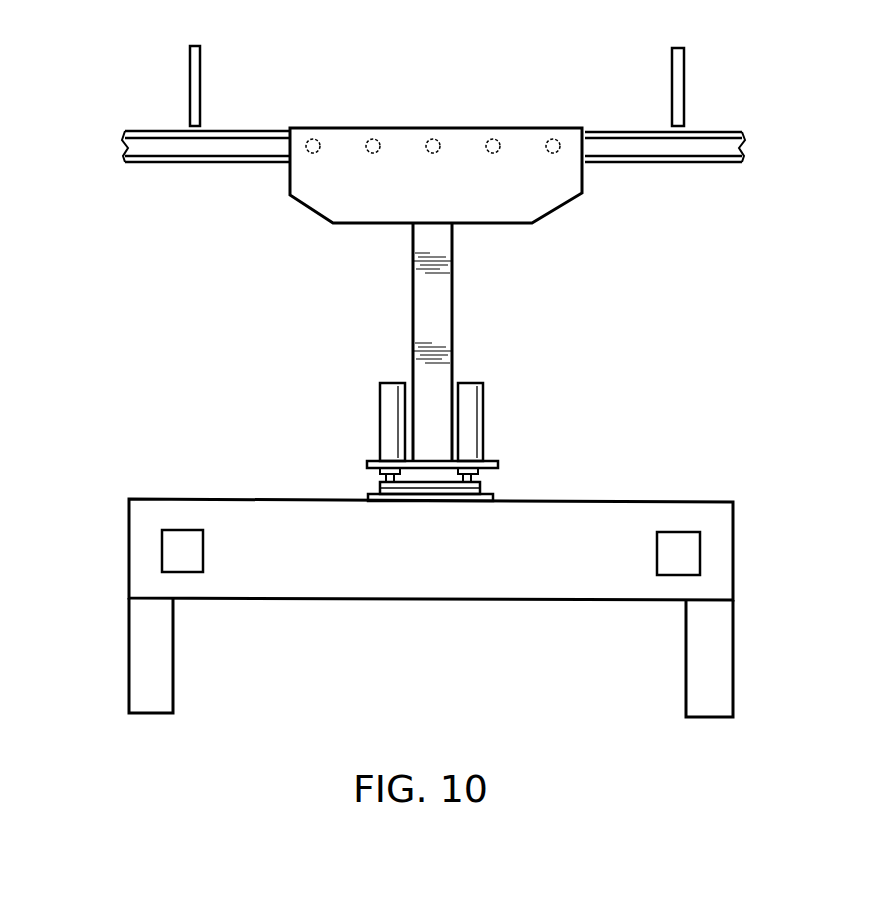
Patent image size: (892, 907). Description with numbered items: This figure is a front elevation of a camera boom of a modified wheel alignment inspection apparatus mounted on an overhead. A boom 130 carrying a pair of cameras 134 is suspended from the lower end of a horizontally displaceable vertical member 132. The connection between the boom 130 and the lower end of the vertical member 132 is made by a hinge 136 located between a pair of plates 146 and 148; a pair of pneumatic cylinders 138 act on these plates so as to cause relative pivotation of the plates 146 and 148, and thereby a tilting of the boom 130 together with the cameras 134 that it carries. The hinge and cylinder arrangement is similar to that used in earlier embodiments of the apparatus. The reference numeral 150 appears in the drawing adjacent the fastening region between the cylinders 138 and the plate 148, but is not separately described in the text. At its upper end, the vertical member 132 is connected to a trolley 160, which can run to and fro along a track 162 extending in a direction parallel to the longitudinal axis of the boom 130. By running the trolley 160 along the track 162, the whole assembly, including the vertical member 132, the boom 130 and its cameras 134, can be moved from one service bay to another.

The trolley 160 is at (295, 218).
The track 162 is at (638, 162).
The vertical member 132 is at (440, 240).
The pneumatic cylinders 138 is at (388, 402).
The fasteners 150 is at (387, 451).
The plate 148 is at (493, 467).
The hinge 136 is at (380, 487).
The plate 146 is at (493, 498).
The boom 130 is at (457, 598).
The cameras 134 is at (177, 552).